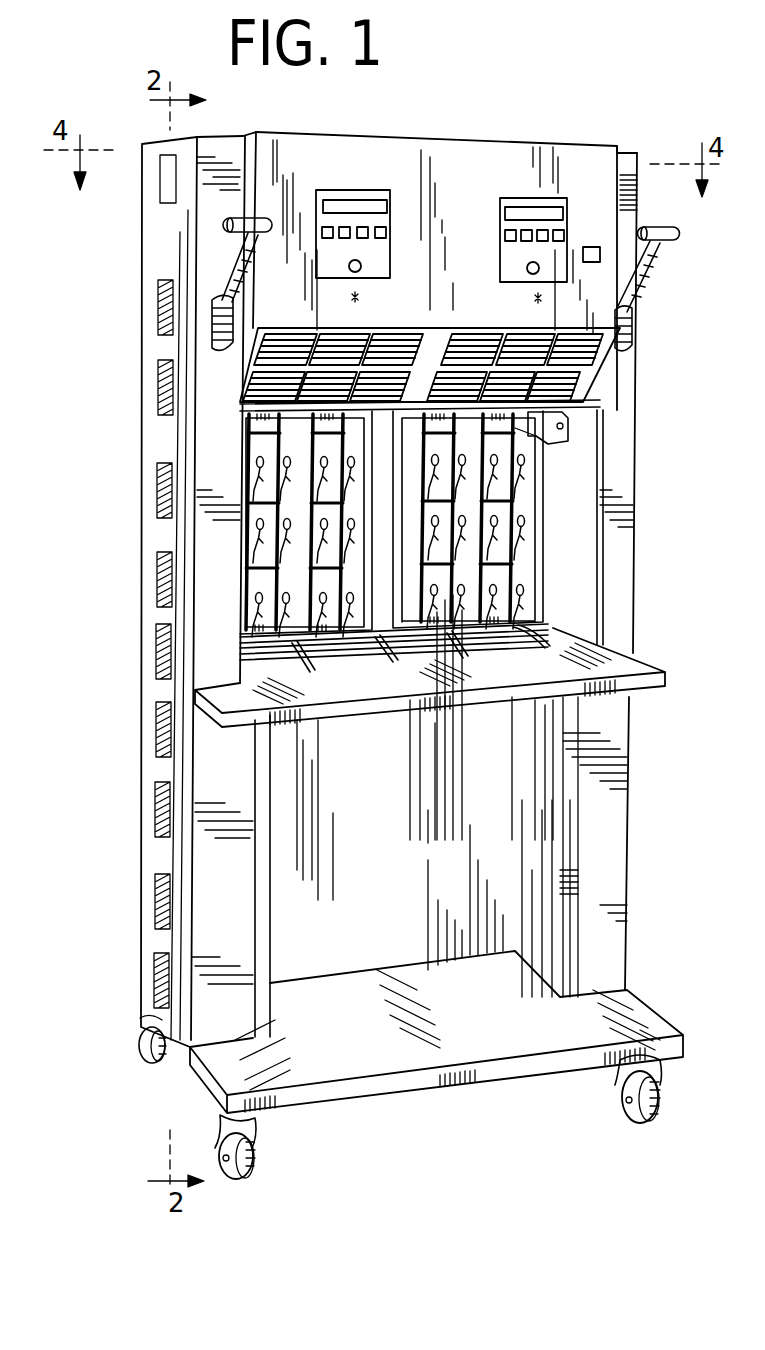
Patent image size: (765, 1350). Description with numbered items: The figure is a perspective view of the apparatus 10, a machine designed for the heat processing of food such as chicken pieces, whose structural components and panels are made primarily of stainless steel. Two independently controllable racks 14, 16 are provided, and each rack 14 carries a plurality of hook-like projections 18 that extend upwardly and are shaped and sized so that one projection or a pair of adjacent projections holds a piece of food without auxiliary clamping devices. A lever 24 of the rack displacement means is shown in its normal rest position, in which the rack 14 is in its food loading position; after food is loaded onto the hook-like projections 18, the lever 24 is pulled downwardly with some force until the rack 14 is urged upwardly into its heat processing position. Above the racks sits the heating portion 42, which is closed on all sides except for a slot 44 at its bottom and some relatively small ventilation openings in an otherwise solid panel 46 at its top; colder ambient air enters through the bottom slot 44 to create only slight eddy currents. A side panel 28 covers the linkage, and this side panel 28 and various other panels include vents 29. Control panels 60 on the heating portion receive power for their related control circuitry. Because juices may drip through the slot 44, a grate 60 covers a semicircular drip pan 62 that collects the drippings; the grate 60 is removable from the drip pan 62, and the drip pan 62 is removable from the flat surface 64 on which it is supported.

The apparatus 10 is at (594, 101).
The rack 14 is at (240, 520).
The rack 16 is at (516, 493).
The hook-like projections 18 is at (290, 458).
The lever 24 is at (231, 264).
The side panel 28 is at (150, 853).
The vents 29 is at (160, 734).
The heating portion 42 is at (452, 173).
The slot 44 is at (407, 413).
The panel 46 is at (510, 145).
The control panels 60 is at (355, 198).
The drip pan 62 is at (457, 660).
The flat surface 64 is at (330, 677).